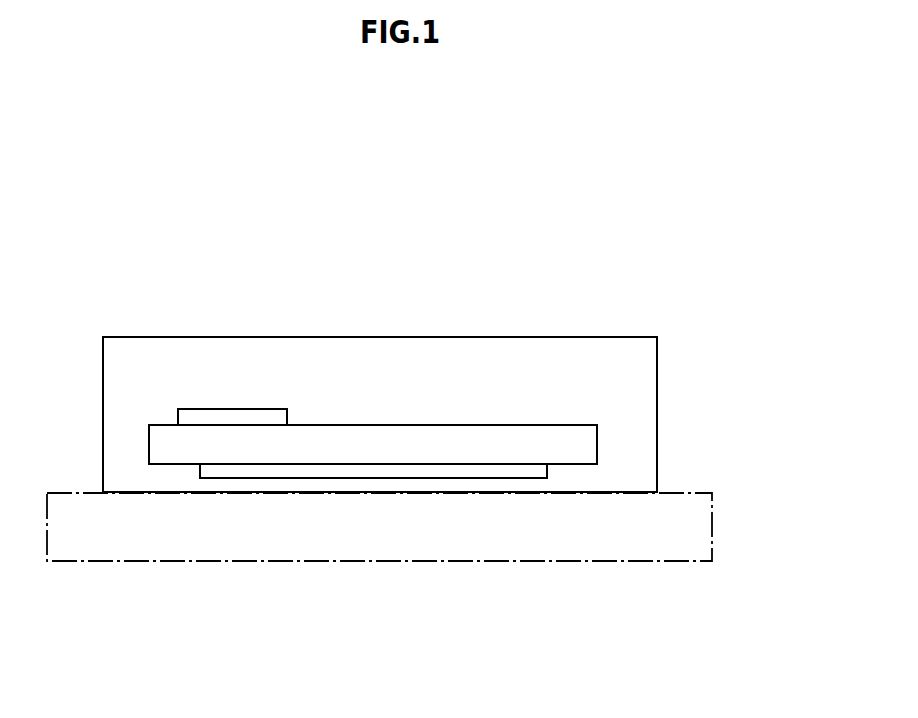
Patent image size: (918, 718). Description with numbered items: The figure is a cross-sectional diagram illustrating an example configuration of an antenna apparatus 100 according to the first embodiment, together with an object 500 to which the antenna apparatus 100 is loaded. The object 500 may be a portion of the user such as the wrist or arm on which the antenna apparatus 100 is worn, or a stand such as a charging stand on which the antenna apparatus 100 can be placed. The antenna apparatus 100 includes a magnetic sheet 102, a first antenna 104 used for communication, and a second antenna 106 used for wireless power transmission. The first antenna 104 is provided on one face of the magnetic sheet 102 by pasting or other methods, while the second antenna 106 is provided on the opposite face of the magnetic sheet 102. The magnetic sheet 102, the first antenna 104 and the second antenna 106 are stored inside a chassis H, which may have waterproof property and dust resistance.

The antenna apparatus 100 is at (710, 306).
The chassis H is at (536, 337).
The magnetic sheet 102 is at (597, 445).
The first antenna 104 is at (232, 408).
The second antenna 106 is at (547, 470).
The object 500 is at (712, 528).